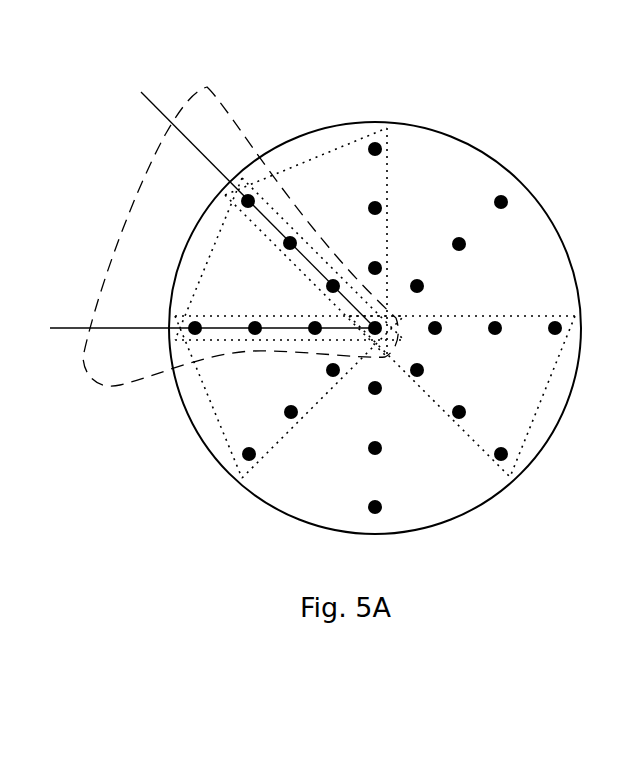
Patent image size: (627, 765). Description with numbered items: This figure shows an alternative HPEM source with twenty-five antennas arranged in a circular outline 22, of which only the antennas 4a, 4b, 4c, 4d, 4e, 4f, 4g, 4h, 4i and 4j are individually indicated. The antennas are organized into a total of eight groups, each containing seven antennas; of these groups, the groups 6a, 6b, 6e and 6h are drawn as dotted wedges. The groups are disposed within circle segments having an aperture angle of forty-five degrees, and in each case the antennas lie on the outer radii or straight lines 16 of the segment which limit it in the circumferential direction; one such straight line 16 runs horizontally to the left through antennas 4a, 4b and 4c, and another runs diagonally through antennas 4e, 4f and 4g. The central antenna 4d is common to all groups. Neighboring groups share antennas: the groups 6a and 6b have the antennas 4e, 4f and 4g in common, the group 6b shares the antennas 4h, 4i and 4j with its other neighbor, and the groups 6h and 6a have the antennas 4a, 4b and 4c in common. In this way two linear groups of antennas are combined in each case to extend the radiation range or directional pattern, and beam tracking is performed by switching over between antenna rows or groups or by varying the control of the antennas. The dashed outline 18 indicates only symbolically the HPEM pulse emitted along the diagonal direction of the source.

The antenna 4a is at (193, 322).
The antenna 4b is at (250, 321).
The antenna 4c is at (313, 334).
The antenna 4d is at (368, 325).
The antenna 4e is at (257, 199).
The antenna 4f is at (296, 240).
The antenna 4g is at (337, 281).
The antenna 4h is at (382, 142).
The antenna 4i is at (382, 210).
The antenna 4j is at (382, 268).
The group of antennas 6a is at (210, 257).
The group of antennas 6b is at (330, 152).
The group of antennas 6e is at (532, 420).
The group of antennas 6h is at (220, 423).
The straight line 16 is at (158, 106).
The HPEM pulse 18 is at (142, 382).
The circular arrangement / panel 22 is at (540, 200).